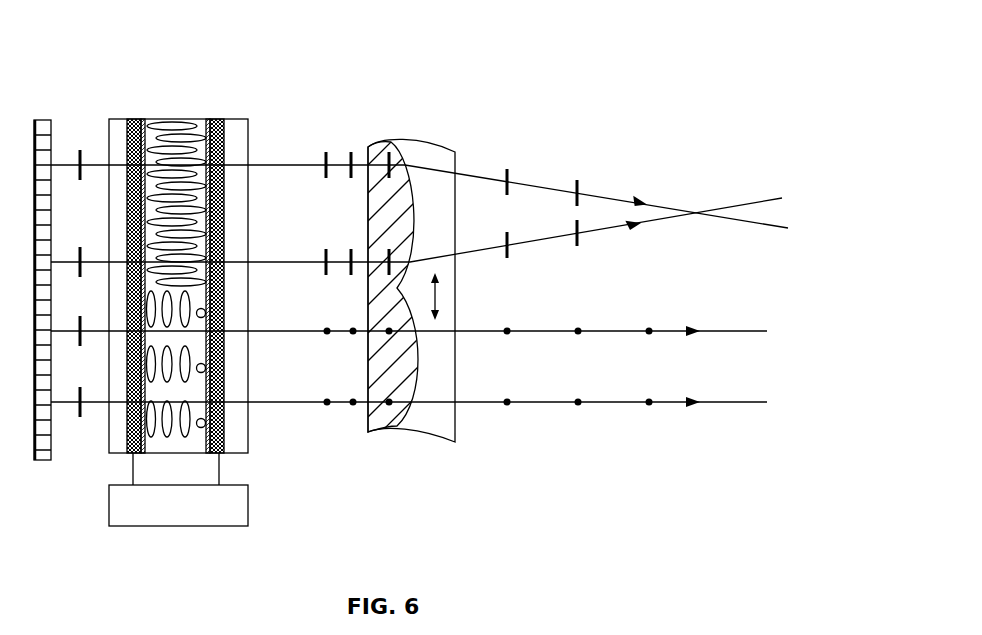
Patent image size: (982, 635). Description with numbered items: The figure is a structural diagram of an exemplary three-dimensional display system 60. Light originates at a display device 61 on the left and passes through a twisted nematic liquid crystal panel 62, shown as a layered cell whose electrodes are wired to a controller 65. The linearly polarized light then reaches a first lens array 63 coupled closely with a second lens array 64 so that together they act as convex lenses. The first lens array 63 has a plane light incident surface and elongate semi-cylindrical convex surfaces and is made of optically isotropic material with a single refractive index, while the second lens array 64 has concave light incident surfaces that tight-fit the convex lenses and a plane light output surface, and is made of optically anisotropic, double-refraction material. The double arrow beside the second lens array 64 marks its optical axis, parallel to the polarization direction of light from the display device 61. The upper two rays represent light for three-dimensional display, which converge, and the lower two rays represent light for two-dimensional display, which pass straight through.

The 3D display system 60 is at (556, 31).
The display device 61 is at (42, 118).
The twisted nematic liquid crystal panel 62 is at (172, 119).
The first lens array 63 is at (378, 150).
The second lens array 64 is at (433, 153).
The controller 65 is at (248, 504).